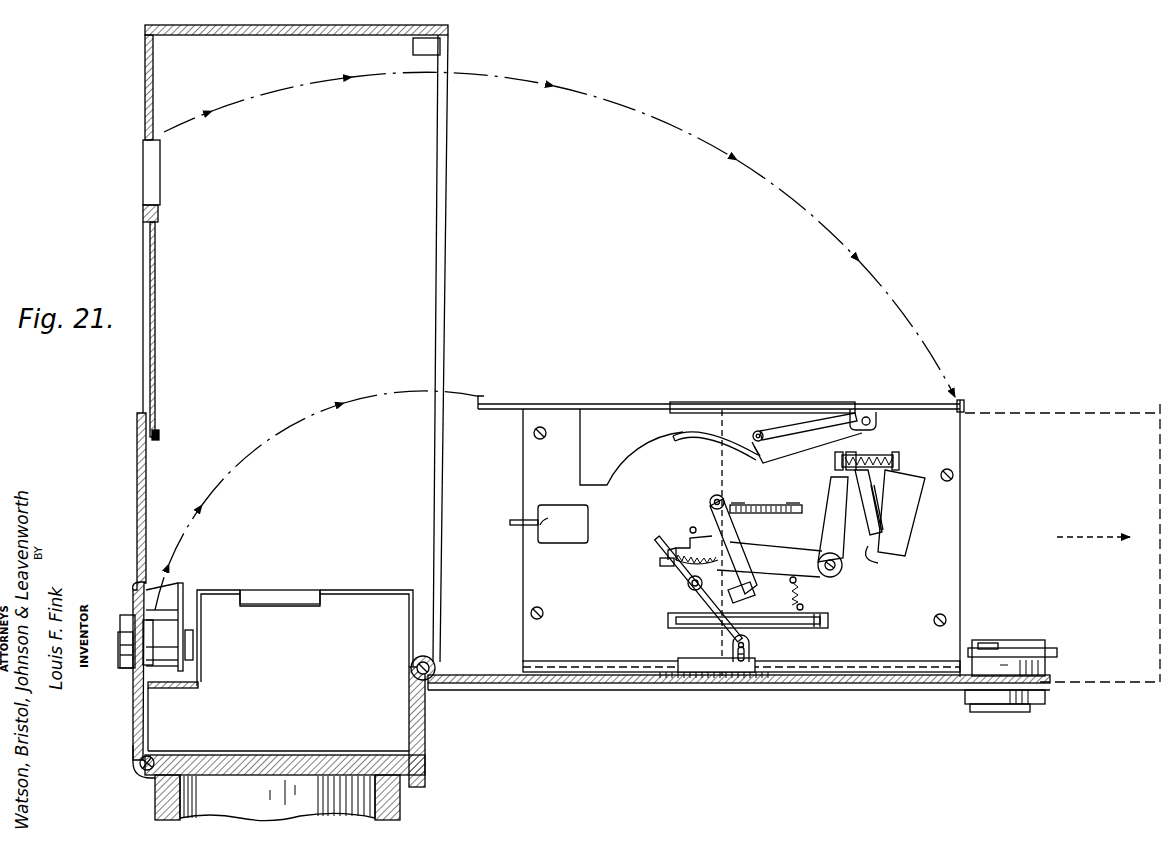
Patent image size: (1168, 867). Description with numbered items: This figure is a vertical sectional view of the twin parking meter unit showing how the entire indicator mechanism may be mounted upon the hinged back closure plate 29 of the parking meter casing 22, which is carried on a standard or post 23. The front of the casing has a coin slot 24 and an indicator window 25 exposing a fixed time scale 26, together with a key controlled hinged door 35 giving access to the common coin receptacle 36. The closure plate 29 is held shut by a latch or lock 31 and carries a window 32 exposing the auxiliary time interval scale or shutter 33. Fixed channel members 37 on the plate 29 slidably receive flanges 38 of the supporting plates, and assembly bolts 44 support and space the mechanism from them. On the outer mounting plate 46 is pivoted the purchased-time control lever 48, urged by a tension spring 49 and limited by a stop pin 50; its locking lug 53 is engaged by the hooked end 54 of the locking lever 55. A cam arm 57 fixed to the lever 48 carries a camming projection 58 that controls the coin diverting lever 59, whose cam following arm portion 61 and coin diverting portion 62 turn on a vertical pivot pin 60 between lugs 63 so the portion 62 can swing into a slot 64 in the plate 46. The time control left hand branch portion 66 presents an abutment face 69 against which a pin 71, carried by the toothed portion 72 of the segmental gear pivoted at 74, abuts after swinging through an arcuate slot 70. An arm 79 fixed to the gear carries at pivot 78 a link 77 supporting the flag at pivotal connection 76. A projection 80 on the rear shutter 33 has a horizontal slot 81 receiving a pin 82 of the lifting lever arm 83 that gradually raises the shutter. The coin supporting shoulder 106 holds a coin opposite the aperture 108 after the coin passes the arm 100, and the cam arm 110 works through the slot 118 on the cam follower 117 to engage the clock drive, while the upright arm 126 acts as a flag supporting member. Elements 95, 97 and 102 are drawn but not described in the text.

The parking meter casing 22 is at (145, 88).
The standard or post 23 is at (279, 617).
The coin slot 24 is at (143, 180).
The indicator window 25 is at (150, 260).
The fixed time scale 26 is at (612, 393).
The back closure plate 29 is at (630, 686).
The latch or lock 31 is at (433, 666).
The window 32 is at (712, 674).
The auxiliary time interval scale or shutter 33 is at (740, 679).
The key controlled hinged door 35 is at (140, 766).
The common receptacle 36 is at (382, 578).
The fixed channel member 37 is at (552, 673).
The flange 38 is at (1093, 684).
The assembly bolt 44 is at (536, 437).
The outer mounting plate 46 is at (950, 582).
The purchased-time control lever 48 is at (762, 562).
The tension spring 49 is at (804, 604).
The stop pin 50 is at (735, 596).
The locking lug 53 is at (745, 572).
The hooked end 54 is at (792, 577).
The locking lever 55 is at (710, 506).
The cam arm 57 is at (842, 568).
The camming projection 58 is at (852, 455).
The coin diverting lever 59 is at (886, 456).
The vertical pivot pin 60 is at (867, 502).
The cam following arm portion 61 is at (833, 519).
The coin diverting portion 62 is at (882, 509).
The lug 63 is at (836, 463).
The slot 64 is at (912, 530).
The time control left hand branch portion 66 is at (698, 545).
The abutment face 69 is at (722, 552).
The arcuate slot 70 is at (672, 566).
The pin 71 is at (664, 556).
The toothed portion 72 is at (688, 588).
The pivot 74 is at (690, 527).
The pivotal connection 76 is at (873, 415).
The link 77 is at (748, 408).
The pivot 78 is at (762, 431).
The arm 79 is at (768, 442).
The projection 80 is at (750, 656).
The horizontal slot 81 is at (750, 651).
The pin 82 is at (733, 641).
The lifting lever arm 83 is at (702, 603).
The hook 95 is at (879, 563).
The plate 97 is at (292, 578).
The arm 100 is at (788, 628).
The slide bar end 102 is at (673, 626).
The coin supporting shoulder 106 is at (547, 514).
The aperture 108 is at (586, 543).
The cam arm 110 is at (788, 505).
The cam follower 117 is at (737, 486).
The slot 118 is at (752, 505).
The upright arm 126 is at (707, 438).